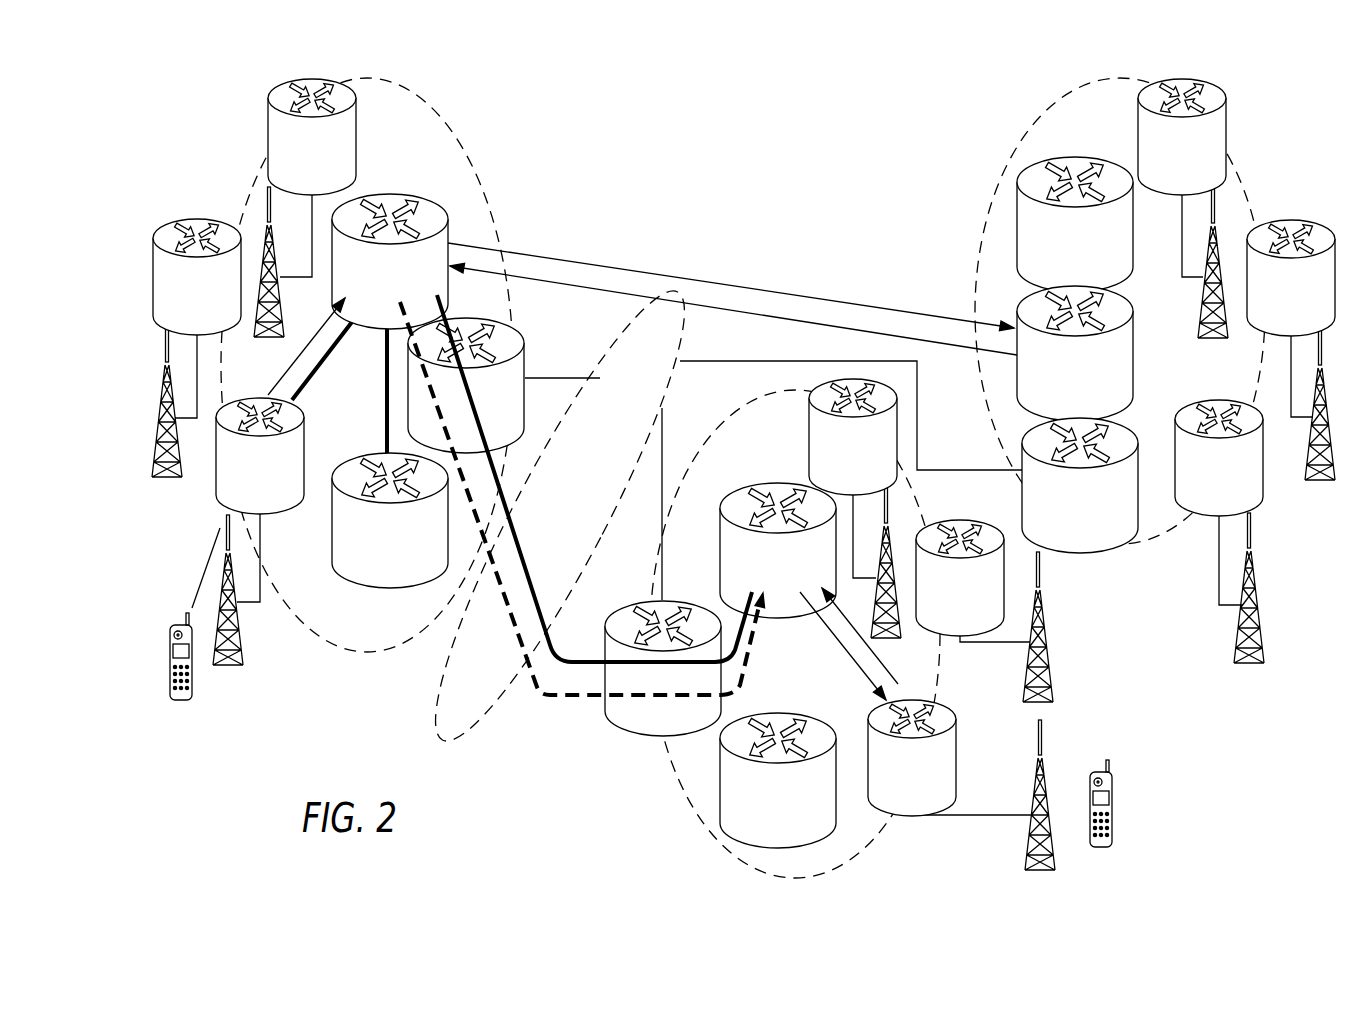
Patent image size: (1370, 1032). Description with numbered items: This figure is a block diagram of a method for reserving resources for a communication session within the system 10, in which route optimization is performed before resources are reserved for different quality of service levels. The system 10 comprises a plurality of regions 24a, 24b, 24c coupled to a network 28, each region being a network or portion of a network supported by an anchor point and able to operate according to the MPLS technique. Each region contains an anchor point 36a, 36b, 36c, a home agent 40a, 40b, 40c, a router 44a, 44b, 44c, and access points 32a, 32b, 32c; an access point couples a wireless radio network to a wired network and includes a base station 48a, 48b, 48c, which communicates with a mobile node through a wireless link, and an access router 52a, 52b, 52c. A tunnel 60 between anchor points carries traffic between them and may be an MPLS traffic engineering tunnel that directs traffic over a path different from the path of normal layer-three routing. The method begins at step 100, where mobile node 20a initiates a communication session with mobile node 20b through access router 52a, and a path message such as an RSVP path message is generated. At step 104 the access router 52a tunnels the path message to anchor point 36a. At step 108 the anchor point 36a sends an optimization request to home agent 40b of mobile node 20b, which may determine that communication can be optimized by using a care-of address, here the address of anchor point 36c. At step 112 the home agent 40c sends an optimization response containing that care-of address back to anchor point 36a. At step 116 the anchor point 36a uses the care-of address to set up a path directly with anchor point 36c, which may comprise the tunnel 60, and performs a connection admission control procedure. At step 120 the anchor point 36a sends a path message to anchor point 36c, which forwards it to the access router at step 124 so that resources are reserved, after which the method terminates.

The system 10 is at (820, 166).
The mobile node 20a is at (194, 680).
The mobile node 20b is at (1113, 808).
The region 24a is at (473, 163).
The region 24b is at (1017, 145).
The region 24c is at (693, 807).
The network 28 is at (443, 742).
The access point 32a is at (300, 568).
The access point 32b is at (1292, 547).
The access point 32c is at (1080, 713).
The anchor point 36a is at (402, 193).
The anchor point 36b is at (1073, 157).
The anchor point 36c is at (768, 482).
The home agent 40a is at (402, 565).
The home agent 40b is at (1135, 350).
The home agent 40c is at (800, 822).
The router 44a is at (527, 360).
The router 44b is at (1020, 485).
The router 44c is at (678, 710).
The base station 48a is at (243, 628).
The base station 48b is at (1265, 626).
The base station 48c is at (1027, 845).
The access router 52a is at (305, 448).
The access router 52b is at (1226, 400).
The access router 52c is at (957, 748).
The tunnel 60 is at (553, 640).
The step 100 is at (197, 590).
The step 104 is at (283, 377).
The step 108 is at (760, 291).
The step 112 is at (965, 350).
The step 116 is at (522, 540).
The step 120 is at (520, 640).
The step 124 is at (826, 643).